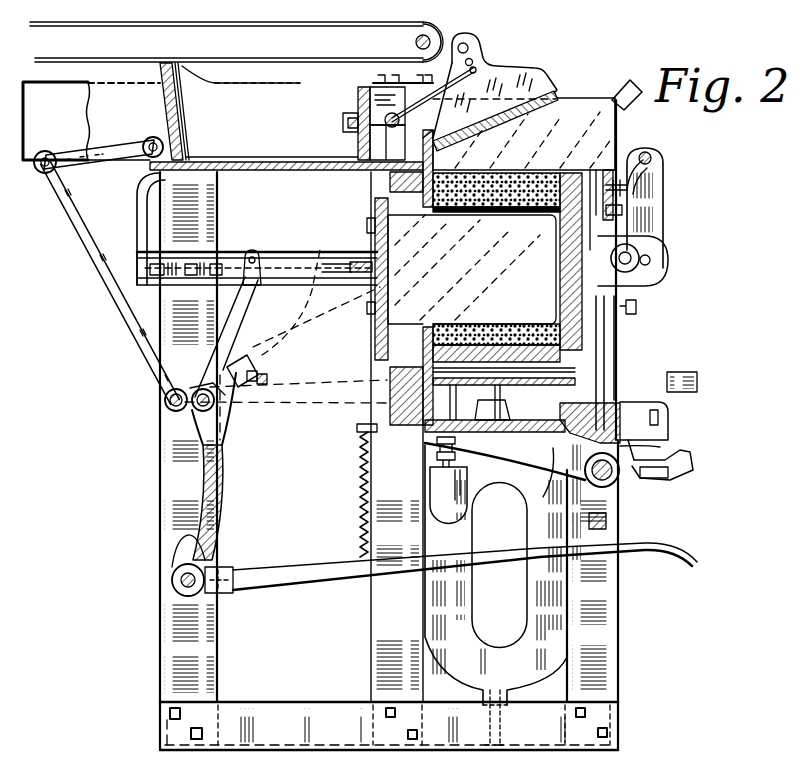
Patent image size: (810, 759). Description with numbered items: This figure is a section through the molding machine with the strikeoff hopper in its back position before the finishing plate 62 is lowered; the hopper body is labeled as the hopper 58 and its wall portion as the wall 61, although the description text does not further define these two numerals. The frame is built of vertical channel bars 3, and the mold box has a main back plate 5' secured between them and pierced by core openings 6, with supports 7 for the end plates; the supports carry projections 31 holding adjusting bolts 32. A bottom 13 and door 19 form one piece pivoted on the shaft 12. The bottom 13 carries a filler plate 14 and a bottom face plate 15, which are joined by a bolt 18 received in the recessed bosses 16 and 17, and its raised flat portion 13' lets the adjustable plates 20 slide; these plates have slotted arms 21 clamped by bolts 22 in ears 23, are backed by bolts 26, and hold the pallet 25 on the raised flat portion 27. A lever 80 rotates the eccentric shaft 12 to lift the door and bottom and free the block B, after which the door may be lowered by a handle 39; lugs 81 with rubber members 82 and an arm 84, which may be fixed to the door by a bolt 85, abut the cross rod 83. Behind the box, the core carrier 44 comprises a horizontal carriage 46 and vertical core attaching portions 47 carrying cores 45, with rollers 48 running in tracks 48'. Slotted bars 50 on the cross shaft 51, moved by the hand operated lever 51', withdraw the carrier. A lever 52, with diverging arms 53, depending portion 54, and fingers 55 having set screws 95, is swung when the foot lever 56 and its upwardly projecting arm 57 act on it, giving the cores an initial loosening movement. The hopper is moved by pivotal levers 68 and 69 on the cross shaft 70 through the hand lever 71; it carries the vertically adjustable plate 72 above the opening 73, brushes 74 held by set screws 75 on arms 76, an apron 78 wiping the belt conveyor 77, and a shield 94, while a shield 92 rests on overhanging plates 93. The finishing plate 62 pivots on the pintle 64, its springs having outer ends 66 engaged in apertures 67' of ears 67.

The vertical channel bar 3 is at (160, 648).
The main back plate 5' is at (495, 125).
The core opening 6 is at (428, 325).
The support 7 is at (470, 615).
The shaft 12 is at (618, 477).
The bottom 13 is at (505, 470).
The raised flat portion 13' is at (704, 451).
The filler plate 14 is at (530, 335).
The bottom face plate 15 is at (510, 330).
The recessed boss 16 is at (547, 473).
The recessed boss 17 is at (716, 366).
The bolt 18 is at (490, 468).
The door 19 is at (605, 330).
The adjustable plate 20 is at (592, 168).
The slotted arm 21 is at (665, 240).
The bolt 22 is at (650, 260).
The ear 23 is at (665, 215).
The pallet 25 is at (560, 230).
The bolt 26 is at (640, 312).
The raised flat portion 27 is at (618, 352).
The projection 31 is at (478, 522).
The bolt 32 is at (470, 495).
The handle 39 is at (660, 164).
The core carrier 44 is at (362, 258).
The core 45 is at (472, 269).
The horizontal carriage 46 is at (327, 262).
The vertical core attaching portion 47 is at (372, 208).
The roller 48 is at (257, 246).
The track 48' is at (243, 246).
The slotted bar 50 is at (250, 300).
The cross shaft 51 is at (234, 412).
The hand operated lever 51' is at (287, 408).
The lever 52 is at (228, 497).
The diverging arm 53 is at (207, 430).
The depending portion 54 is at (212, 540).
The finger 55 is at (258, 364).
The foot lever 56 is at (315, 577).
The upwardly projecting arm 57 is at (180, 556).
The tray 58 is at (270, 111).
The plate 61 is at (182, 118).
The finishing plate 62 is at (592, 92).
The pintle 64 is at (358, 137).
The spring outer end 66 is at (497, 66).
The ear 67 is at (450, 70).
The aperture 67' is at (495, 75).
The pivotal lever 68 is at (100, 160).
The pivotal lever 69 is at (116, 295).
The cross shaft 70 is at (164, 401).
The hand lever 71 is at (316, 303).
The vertically adjustable plate 72 is at (358, 106).
The opening 73 is at (286, 153).
The brush 74 is at (389, 143).
The set screw 75 is at (418, 45).
The arm 76 is at (420, 82).
The belt conveyor 77 is at (236, 42).
The apron 78 is at (186, 63).
The lever 80 is at (665, 190).
The lug 81 is at (662, 450).
The rubber member 82 is at (670, 476).
The cross rod 83 is at (606, 522).
The arm 84 is at (648, 432).
The bolt 85 is at (660, 412).
The shield 92 is at (137, 232).
The overhanging plate 93 is at (160, 218).
The shield 94 is at (62, 84).
The set screw 95 is at (268, 380).
The block B is at (519, 134).